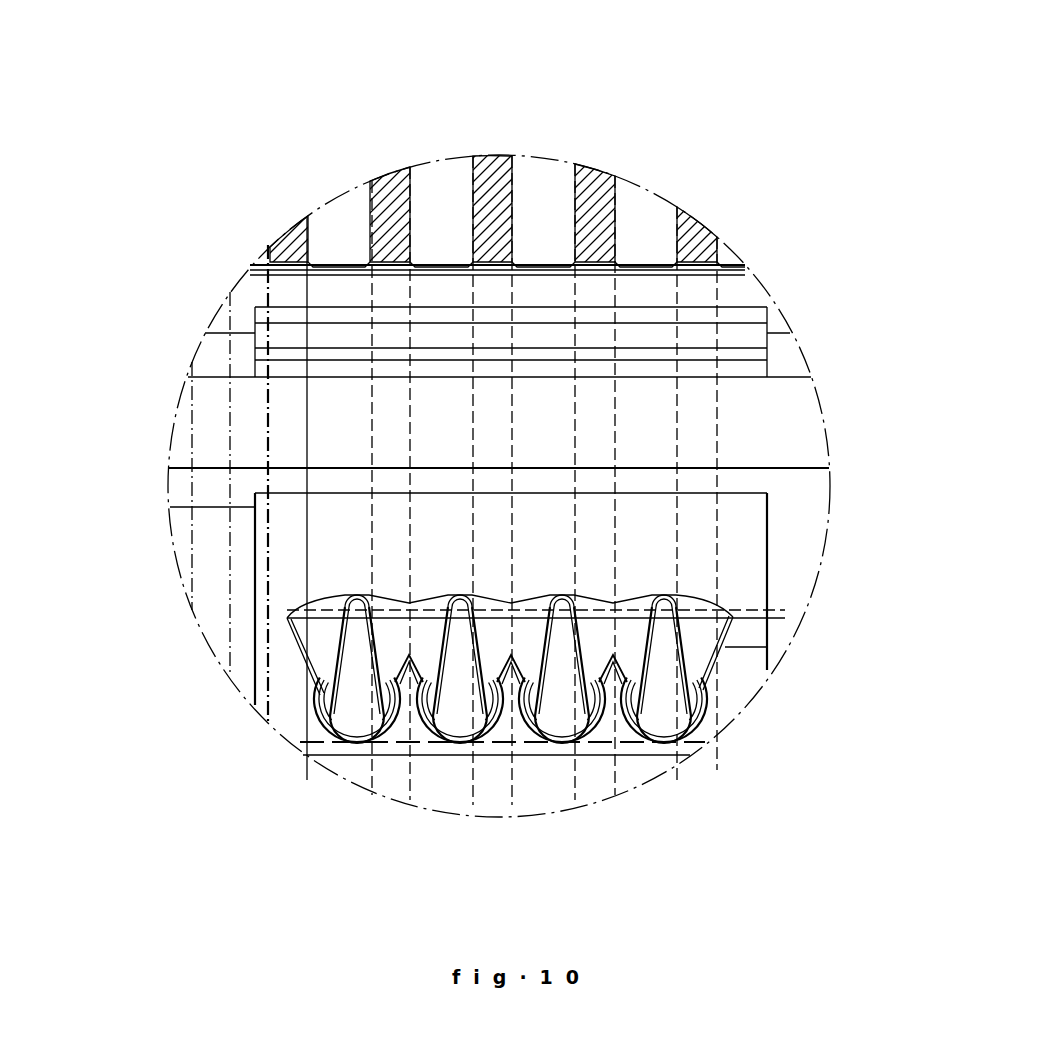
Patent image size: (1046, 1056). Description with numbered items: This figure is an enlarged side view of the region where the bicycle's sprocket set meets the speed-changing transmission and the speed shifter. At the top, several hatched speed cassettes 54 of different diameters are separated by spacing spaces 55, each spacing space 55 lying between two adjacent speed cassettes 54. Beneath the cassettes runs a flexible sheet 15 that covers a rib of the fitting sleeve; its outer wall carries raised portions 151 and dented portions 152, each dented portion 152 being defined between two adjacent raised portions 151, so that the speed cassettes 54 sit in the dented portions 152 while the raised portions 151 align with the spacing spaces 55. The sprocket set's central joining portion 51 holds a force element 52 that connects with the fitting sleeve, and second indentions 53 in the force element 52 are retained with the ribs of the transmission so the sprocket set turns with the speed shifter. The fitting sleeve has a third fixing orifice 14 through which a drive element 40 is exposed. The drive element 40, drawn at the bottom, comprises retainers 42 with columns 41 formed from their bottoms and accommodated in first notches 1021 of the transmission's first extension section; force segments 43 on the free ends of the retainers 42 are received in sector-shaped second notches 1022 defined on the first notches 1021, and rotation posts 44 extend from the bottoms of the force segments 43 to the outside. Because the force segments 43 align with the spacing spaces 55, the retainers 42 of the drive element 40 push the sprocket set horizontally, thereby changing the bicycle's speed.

The third fixing orifice 14 is at (733, 527).
The flexible sheet 15 is at (732, 265).
The raised portion 151 is at (648, 262).
The dented portion 152 is at (600, 267).
The drive element 40 is at (192, 705).
The column 41 is at (330, 722).
The retainer 42 is at (358, 692).
The force segment 43 is at (357, 596).
The rotation post 44 is at (317, 615).
The joining portion 51 is at (372, 277).
The force element 52 is at (703, 432).
The second indention 53 is at (635, 430).
The speed cassette 54 is at (601, 200).
The spacing space 55 is at (545, 185).
The first notch 1021 is at (393, 740).
The second notch 1022 is at (323, 605).